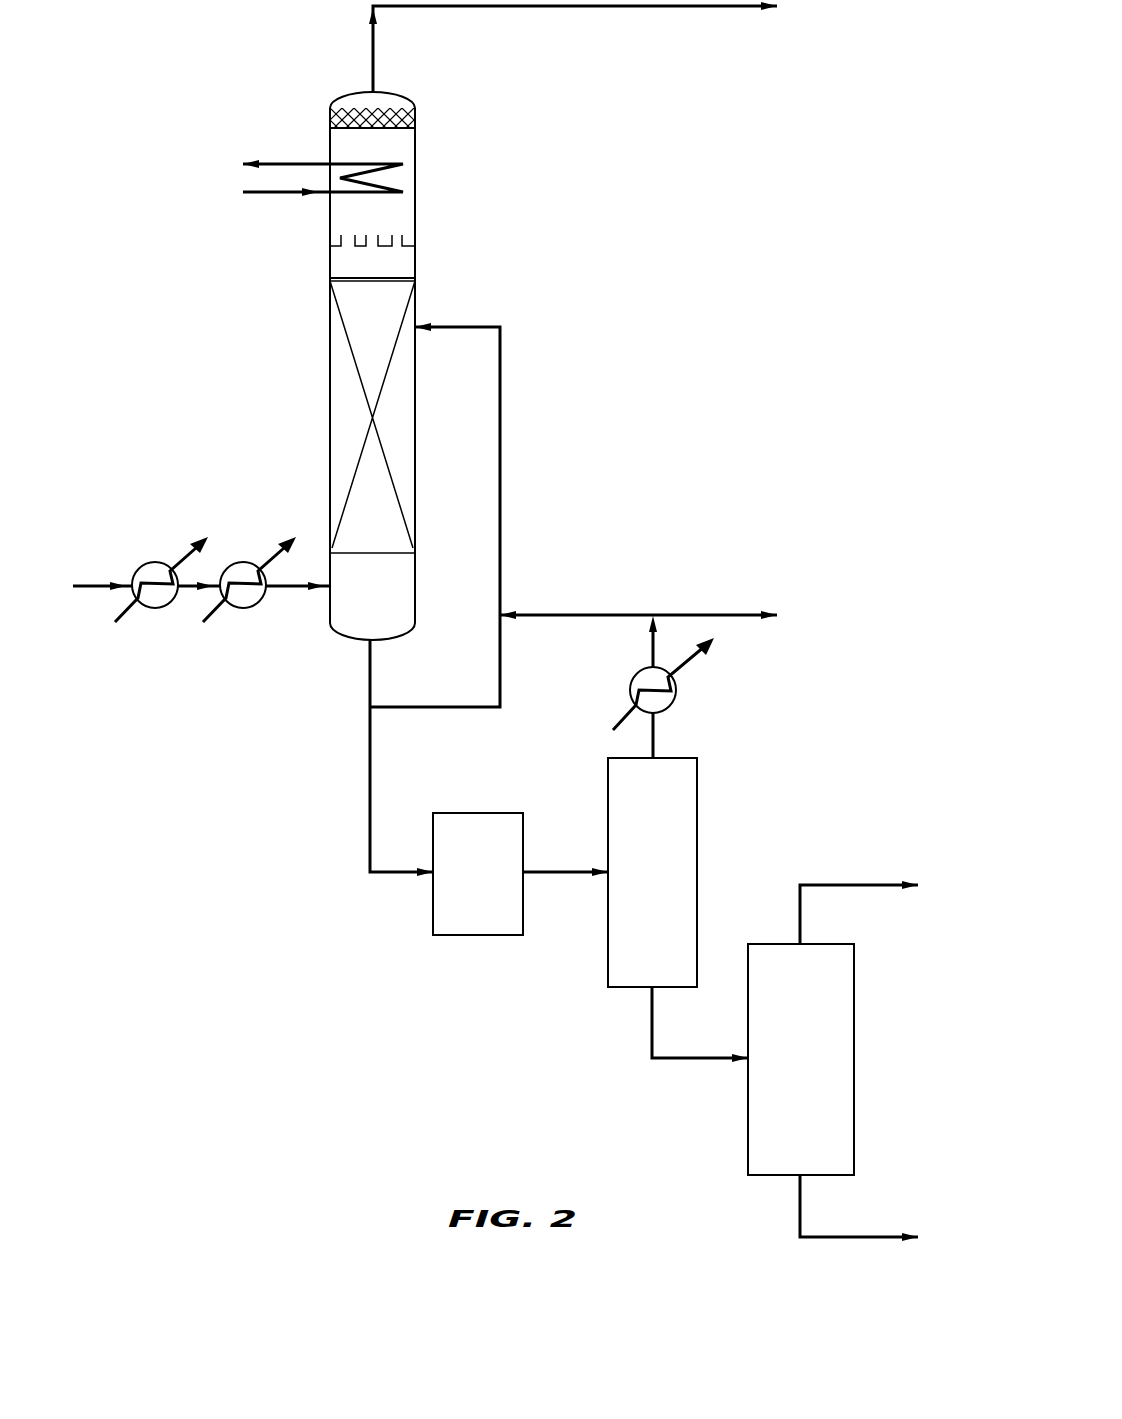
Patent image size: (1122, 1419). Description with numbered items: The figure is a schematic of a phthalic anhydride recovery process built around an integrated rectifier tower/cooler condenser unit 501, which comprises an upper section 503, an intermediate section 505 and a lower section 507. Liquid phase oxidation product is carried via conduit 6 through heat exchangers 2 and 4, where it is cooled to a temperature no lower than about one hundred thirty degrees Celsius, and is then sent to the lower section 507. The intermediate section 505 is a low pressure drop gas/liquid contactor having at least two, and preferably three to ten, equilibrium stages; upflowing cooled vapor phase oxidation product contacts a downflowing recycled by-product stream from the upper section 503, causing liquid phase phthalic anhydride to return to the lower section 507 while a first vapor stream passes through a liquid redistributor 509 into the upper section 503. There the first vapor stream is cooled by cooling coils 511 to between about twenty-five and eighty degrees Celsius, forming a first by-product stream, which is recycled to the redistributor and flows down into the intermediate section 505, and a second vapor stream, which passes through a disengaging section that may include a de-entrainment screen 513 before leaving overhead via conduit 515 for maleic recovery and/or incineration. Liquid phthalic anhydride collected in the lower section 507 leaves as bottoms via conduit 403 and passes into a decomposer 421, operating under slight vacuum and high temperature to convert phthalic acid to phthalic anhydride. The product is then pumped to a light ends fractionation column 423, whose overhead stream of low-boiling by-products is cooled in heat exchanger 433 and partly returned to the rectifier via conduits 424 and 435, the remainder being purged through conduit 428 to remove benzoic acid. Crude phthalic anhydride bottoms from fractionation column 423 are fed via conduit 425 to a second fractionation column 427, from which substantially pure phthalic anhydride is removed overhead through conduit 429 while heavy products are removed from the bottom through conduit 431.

The heat exchanger 2 is at (151, 562).
The heat exchanger 4 is at (239, 562).
The conduit 6 is at (90, 583).
The conduit 403 is at (370, 675).
The decomposer 421 is at (470, 813).
The fractionation column 423 is at (670, 758).
The conduit 424 is at (597, 615).
The conduit 425 is at (652, 1030).
The second fractionation column 427 is at (775, 944).
The conduit 428 is at (718, 615).
The conduit 429 is at (850, 885).
The conduit 431 is at (857, 1237).
The heat exchanger 433 is at (680, 686).
The conduit 435 is at (500, 407).
The integrated rectifier tower/cooler condenser unit 501 is at (330, 368).
The upper section 503 is at (433, 108).
The intermediate section 505 is at (390, 321).
The lower section 507 is at (428, 553).
The liquid redistributor 509 is at (337, 253).
The cooling coils 511 is at (292, 194).
The de-entrainment screen 513 is at (330, 112).
The conduit 515 is at (520, 6).